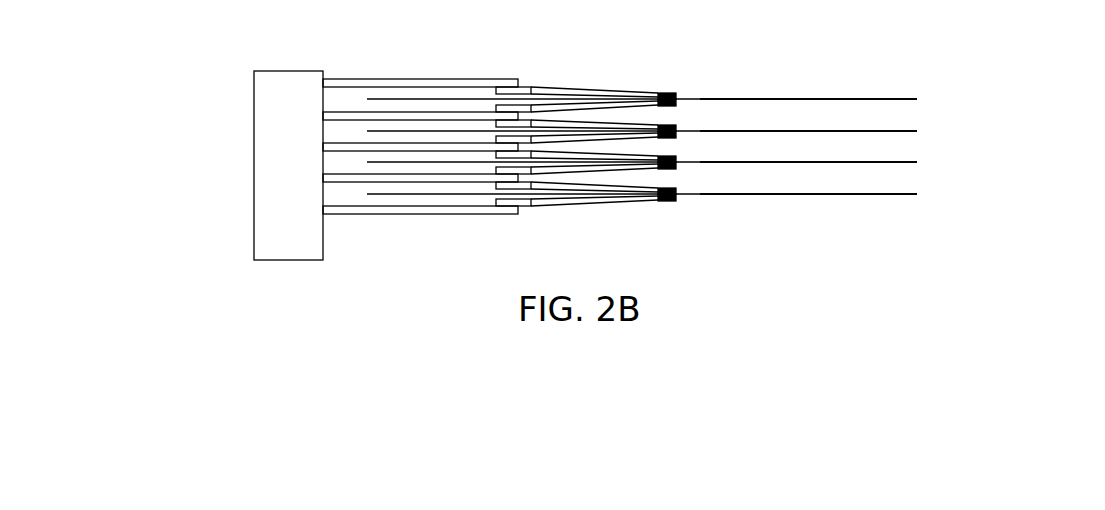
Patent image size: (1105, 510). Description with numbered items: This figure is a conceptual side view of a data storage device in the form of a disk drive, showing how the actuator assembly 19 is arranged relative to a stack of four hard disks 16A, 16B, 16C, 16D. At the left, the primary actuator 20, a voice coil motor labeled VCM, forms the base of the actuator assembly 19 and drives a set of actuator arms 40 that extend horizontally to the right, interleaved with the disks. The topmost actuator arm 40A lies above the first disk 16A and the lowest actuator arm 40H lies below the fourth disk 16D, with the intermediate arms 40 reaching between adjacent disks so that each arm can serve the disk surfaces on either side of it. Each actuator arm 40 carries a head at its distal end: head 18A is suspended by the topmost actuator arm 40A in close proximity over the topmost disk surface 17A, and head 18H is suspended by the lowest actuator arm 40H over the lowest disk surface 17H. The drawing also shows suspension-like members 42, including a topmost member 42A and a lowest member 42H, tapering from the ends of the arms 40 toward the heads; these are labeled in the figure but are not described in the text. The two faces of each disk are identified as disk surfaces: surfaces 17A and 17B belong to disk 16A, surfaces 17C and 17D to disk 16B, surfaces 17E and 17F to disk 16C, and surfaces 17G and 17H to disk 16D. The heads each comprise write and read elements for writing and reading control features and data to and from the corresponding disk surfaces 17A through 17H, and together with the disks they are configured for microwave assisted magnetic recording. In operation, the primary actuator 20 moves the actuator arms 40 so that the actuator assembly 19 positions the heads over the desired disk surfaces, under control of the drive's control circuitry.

The primary actuator 20 is at (254, 103).
The actuator arms 40 is at (427, 169).
The topmost actuator arm 40A is at (431, 79).
The lowest actuator arm 40H is at (383, 214).
The actuator assembly 19 is at (651, 147).
The suspensions 42 is at (628, 164).
The first suspension 42A is at (630, 87).
The last suspension 42H is at (619, 213).
The head 18A is at (678, 92).
The head 18H is at (680, 206).
The hard disk 16A is at (929, 99).
The hard disk 16B is at (929, 131).
The hard disk 16C is at (929, 162).
The hard disk 16D is at (929, 194).
The topmost disk surface 17A is at (801, 99).
The disk surface 17B is at (780, 99).
The disk surface 17C is at (808, 131).
The disk surface 17D is at (780, 131).
The disk surface 17E is at (808, 162).
The disk surface 17F is at (780, 162).
The disk surface 17G is at (808, 194).
The lowest disk surface 17H is at (850, 194).